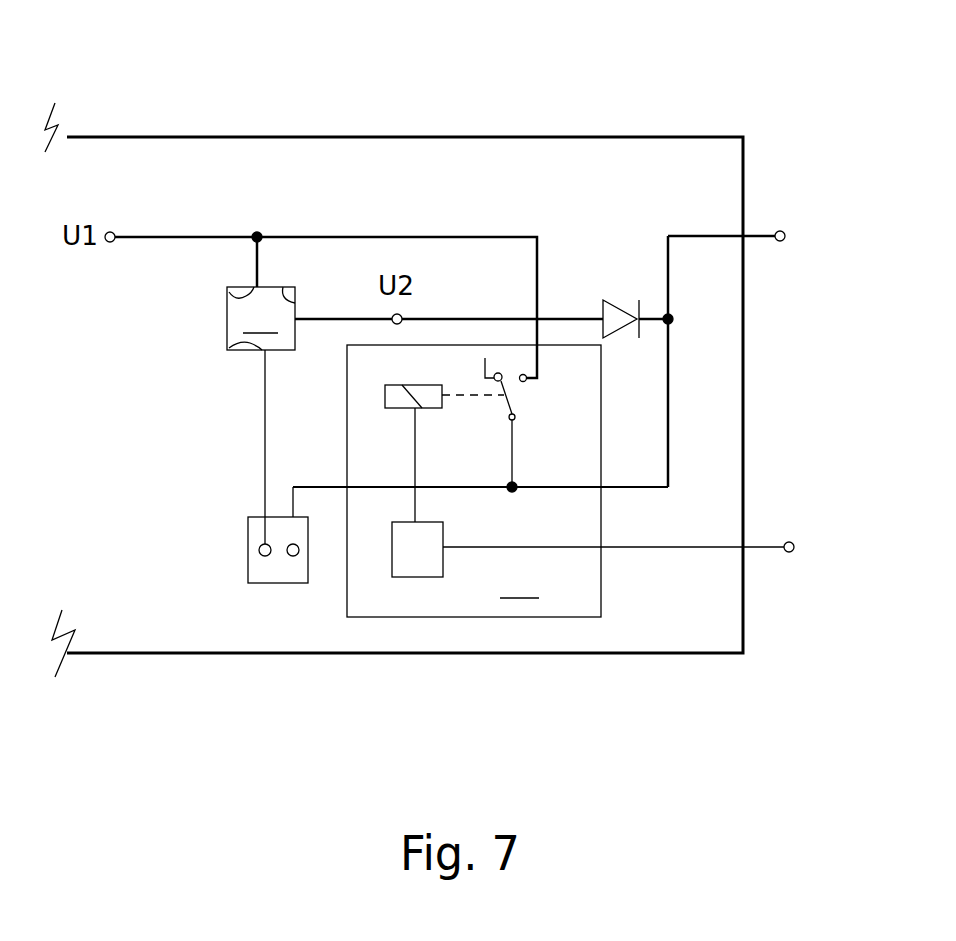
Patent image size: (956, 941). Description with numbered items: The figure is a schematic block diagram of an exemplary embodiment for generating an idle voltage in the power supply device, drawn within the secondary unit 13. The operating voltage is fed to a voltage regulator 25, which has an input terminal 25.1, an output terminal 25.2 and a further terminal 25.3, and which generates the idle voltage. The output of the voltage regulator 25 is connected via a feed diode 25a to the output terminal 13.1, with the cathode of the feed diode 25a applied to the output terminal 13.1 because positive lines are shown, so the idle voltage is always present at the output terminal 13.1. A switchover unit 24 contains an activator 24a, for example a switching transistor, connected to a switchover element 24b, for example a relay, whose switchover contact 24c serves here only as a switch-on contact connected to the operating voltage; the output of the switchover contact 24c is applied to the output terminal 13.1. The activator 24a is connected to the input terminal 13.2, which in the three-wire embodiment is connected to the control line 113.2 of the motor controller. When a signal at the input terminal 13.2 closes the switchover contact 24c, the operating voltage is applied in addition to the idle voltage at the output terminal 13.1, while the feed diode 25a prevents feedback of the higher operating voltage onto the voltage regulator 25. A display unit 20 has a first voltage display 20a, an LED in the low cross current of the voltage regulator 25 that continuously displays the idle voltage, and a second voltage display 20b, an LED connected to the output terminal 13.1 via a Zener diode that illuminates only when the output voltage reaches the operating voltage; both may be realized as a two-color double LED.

The secondary unit 13 is at (465, 135).
The output terminal 13.1 is at (784, 231).
The input terminal 13.2 is at (790, 542).
The control line 113.2 is at (646, 494).
The display unit 20 is at (260, 584).
The first voltage display 20a is at (248, 548).
The second voltage display 20b is at (294, 557).
The switchover unit 24 is at (474, 481).
The activator 24a is at (405, 578).
The switchover element 24b is at (397, 410).
The switchover contact 24c is at (534, 405).
The voltage regulator 25 is at (261, 318).
The converter input 25.1 is at (231, 290).
The converter output 25.2 is at (286, 293).
The converter ground terminal 25.3 is at (228, 350).
The feed diode 25a is at (618, 301).